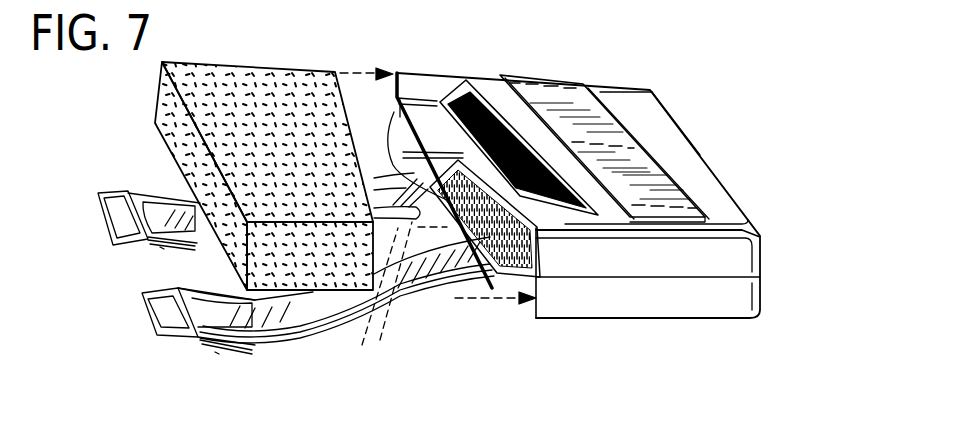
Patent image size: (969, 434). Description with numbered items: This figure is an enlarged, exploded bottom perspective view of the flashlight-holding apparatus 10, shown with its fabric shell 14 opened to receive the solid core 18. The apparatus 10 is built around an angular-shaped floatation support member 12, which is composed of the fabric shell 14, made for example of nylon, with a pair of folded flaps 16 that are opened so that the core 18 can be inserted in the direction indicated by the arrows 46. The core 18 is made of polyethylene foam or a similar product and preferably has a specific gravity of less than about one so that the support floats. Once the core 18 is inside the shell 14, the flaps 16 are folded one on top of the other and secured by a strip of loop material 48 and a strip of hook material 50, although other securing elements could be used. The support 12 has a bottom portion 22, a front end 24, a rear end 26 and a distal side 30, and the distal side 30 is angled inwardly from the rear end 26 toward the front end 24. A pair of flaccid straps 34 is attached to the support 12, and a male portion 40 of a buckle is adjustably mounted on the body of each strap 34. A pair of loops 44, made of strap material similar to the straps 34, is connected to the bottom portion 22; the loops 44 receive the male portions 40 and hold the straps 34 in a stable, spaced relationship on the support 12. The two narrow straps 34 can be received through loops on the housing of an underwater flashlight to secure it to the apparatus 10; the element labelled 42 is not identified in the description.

The apparatus 10 is at (655, 60).
The floatation support member 12 is at (677, 148).
The fabric shell 14 is at (702, 182).
The folded flaps 16 is at (437, 90).
The solid core 18 is at (288, 74).
The bottom portion 22 is at (660, 120).
The front end 24 is at (670, 297).
The rear end 26 is at (478, 92).
The distal side 30 is at (762, 254).
The flaccid straps 34 is at (164, 200).
The male portion 40 is at (127, 239).
The hose end 42 is at (424, 302).
The loops 44 is at (583, 96).
The arrows 46 is at (347, 68).
The strip of loop material 48 is at (492, 100).
The strip of hook material 50 is at (496, 282).